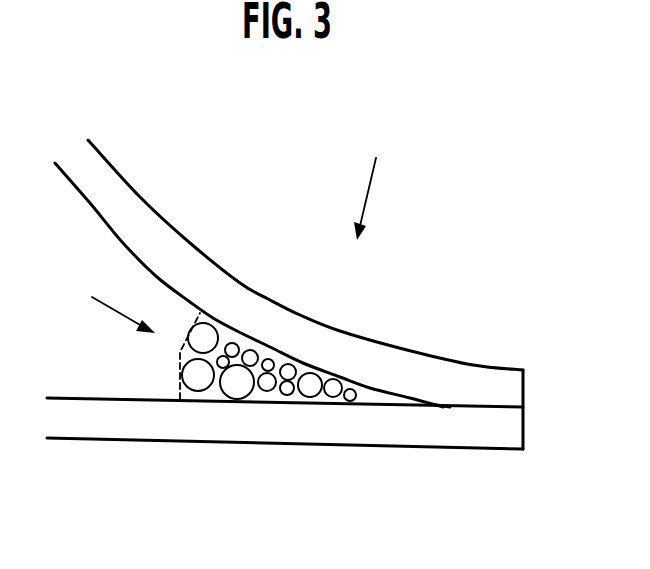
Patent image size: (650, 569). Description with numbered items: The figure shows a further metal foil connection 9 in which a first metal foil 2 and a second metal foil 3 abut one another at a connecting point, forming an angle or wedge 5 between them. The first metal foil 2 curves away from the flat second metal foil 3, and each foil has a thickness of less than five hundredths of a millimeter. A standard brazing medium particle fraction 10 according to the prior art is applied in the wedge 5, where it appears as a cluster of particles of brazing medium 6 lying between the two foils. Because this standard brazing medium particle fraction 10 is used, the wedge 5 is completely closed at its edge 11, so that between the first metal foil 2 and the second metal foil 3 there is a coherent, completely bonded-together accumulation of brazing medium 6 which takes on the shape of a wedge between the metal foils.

The first metal foil 2 is at (350, 355).
The second metal foil 3 is at (362, 427).
The wedge 5 is at (111, 305).
The brazing medium 6 is at (235, 337).
The further metal foil connection 9 is at (370, 180).
The standard brazing medium particle fraction 10 is at (195, 380).
The edge 11 is at (443, 407).